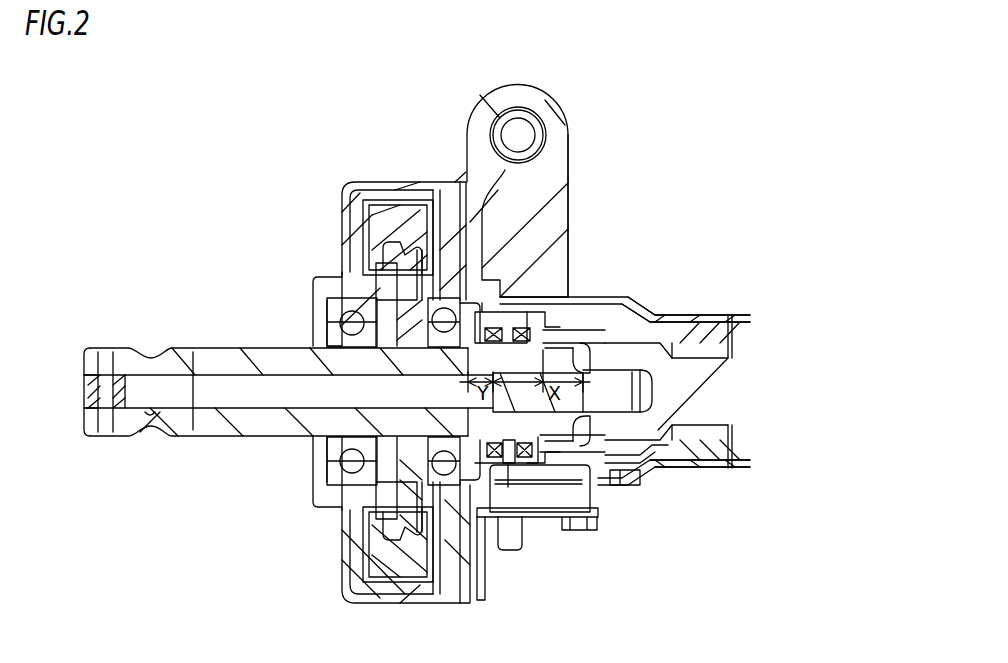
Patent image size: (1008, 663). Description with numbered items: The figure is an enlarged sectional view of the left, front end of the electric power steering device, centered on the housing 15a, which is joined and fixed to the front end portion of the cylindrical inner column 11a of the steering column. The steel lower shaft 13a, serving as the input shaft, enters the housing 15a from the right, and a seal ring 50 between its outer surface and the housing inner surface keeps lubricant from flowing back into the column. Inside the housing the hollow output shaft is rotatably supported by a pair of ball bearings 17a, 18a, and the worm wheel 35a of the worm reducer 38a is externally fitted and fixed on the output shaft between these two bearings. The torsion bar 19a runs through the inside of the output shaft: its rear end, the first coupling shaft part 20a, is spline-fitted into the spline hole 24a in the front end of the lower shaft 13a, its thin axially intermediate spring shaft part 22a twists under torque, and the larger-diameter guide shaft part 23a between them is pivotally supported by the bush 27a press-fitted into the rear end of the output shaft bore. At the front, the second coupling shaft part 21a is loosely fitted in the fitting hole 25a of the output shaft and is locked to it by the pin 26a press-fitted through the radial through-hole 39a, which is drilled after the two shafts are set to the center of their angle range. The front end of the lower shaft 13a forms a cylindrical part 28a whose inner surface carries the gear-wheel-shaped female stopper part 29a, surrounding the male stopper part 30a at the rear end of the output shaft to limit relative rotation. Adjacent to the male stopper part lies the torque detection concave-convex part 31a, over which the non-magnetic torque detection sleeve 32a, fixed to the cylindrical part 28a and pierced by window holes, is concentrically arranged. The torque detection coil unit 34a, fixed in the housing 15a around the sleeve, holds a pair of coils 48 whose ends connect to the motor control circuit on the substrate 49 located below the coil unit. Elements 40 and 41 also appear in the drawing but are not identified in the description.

The inner column 11a is at (740, 316).
The lower shaft 13a is at (696, 335).
The housing 15a is at (362, 200).
The ball bearing 17a is at (326, 300).
The ball bearing 18a is at (465, 300).
The torsion bar 19a is at (232, 440).
The first coupling shaft part 20a is at (665, 340).
The second coupling shaft part 21a is at (100, 346).
The spring shaft part 22a is at (195, 438).
The guide shaft part 23a is at (535, 460).
The spline hole 24a is at (652, 488).
The fitting hole 25a is at (146, 438).
The pin 26a is at (104, 438).
The bush 27a is at (522, 462).
The cylindrical part 28a is at (625, 308).
The female stopper part 29a is at (600, 318).
The male stopper part 30a is at (540, 462).
The torque detection concave-convex part 31a is at (588, 268).
The torque detection sleeve 32a is at (582, 310).
The torque detection coil unit 34a is at (567, 238).
The worm wheel 35a is at (412, 222).
The worm reducer 38a is at (418, 205).
The radial through-hole 39a is at (122, 348).
The housing wall 40 is at (340, 250).
The mounting eye 41 is at (550, 128).
The coil 48 is at (480, 520).
The substrate 49 is at (507, 495).
The seal ring 50 is at (610, 488).